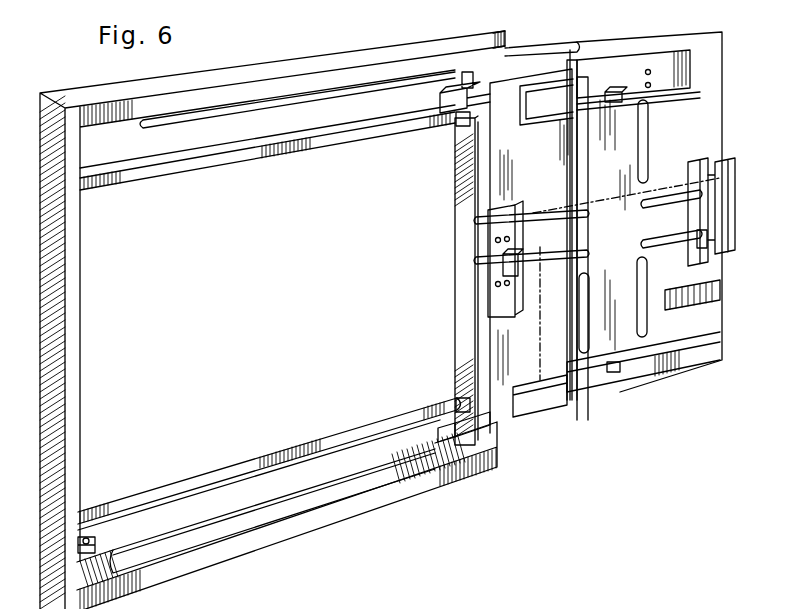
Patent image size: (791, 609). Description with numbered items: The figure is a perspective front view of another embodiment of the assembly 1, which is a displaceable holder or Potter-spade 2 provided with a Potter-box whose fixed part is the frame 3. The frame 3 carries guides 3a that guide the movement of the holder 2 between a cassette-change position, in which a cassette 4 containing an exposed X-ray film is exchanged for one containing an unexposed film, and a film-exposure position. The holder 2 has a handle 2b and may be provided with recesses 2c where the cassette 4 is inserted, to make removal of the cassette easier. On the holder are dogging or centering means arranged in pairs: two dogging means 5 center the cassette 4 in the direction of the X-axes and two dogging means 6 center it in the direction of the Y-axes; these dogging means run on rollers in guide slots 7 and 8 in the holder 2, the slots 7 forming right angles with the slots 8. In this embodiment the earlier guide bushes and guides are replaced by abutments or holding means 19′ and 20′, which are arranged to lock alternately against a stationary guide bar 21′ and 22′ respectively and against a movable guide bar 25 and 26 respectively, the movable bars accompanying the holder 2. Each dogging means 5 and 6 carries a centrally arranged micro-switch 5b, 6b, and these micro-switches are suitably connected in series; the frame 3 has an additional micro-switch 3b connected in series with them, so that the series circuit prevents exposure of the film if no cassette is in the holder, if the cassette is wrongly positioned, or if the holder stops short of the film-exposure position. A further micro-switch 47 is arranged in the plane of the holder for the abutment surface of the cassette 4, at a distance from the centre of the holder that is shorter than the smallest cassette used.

The assembly 1 is at (507, 456).
The holder 2 is at (641, 405).
The handle 2b is at (730, 196).
The recess 2c is at (700, 291).
The frame 3 is at (410, 508).
The guide 3a is at (220, 121).
The micro-switch 3b is at (94, 535).
The cassette 4 is at (704, 358).
The dogging means 5 is at (492, 251).
The micro-switch 5b is at (505, 263).
The dogging means 6 is at (700, 74).
The micro-switch 6b is at (612, 91).
The guide slot 7 is at (660, 238).
The guide slot 8 is at (647, 148).
The holding means 19′ is at (454, 386).
The holding means 20′ is at (460, 128).
The stationary guide bar 21′ is at (325, 441).
The stationary guide bar 22′ is at (285, 153).
The movable guide bar 25 is at (440, 416).
The movable guide bar 26 is at (455, 92).
The micro-switch 47 is at (640, 234).